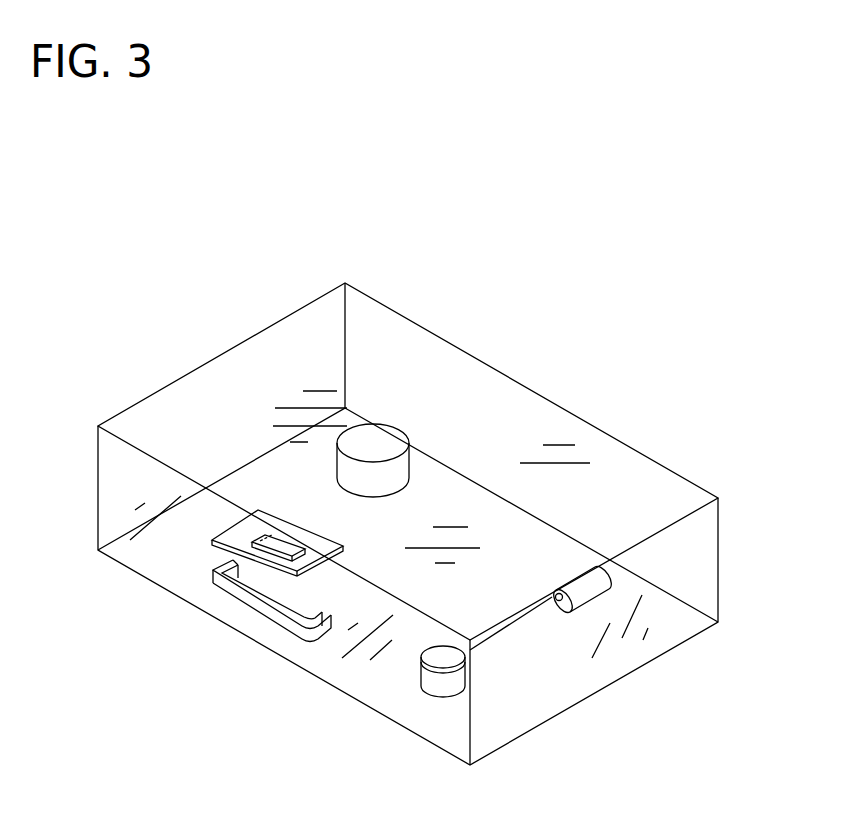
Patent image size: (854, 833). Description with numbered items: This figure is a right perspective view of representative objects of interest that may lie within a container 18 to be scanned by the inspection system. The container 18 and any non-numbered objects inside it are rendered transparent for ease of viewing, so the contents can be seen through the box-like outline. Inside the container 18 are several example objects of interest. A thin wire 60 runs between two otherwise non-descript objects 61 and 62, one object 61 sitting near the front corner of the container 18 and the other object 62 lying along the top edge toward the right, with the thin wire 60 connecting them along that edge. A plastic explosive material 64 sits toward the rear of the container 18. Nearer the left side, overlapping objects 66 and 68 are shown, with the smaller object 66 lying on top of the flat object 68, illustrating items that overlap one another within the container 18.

The container 18 is at (553, 237).
The thin wire 60 is at (510, 630).
The non-descript object 61 is at (432, 661).
The non-descript object 62 is at (600, 585).
The plastic explosive material 64 is at (383, 432).
The overlapping object 66 is at (228, 539).
The overlapping object 68 is at (300, 520).